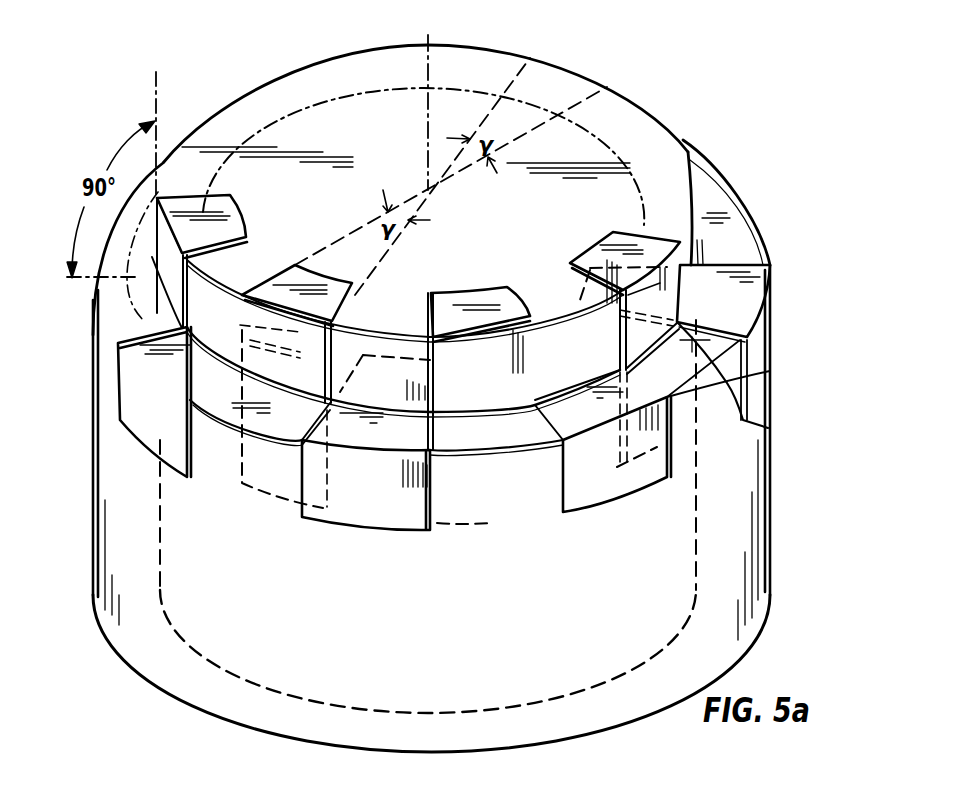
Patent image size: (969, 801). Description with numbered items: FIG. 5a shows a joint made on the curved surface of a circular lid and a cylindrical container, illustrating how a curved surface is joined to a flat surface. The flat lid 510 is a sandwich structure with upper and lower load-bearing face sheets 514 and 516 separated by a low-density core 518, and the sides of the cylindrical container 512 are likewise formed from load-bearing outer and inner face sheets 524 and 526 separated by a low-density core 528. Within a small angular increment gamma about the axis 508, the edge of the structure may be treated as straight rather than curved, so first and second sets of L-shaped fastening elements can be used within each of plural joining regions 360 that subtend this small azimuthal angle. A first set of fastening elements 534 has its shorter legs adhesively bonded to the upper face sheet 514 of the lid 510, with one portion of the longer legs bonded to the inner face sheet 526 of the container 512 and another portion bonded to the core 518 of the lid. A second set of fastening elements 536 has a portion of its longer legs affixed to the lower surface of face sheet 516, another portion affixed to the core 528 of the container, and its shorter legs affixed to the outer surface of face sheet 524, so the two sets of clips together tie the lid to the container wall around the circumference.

The axis 508 is at (427, 38).
The joining regions 360 is at (617, 77).
The flat lid 510 is at (632, 107).
The cylindrical container 512 is at (768, 510).
The upper load-bearing face sheet 514 is at (670, 140).
The lower load-bearing face sheet 516 is at (187, 355).
The low-density core 518 is at (693, 250).
The outer load-bearing face sheet 524 is at (768, 428).
The inner load-bearing face sheet 526 is at (770, 371).
The low-density core 528 is at (737, 250).
The first set of fastening elements 534 is at (238, 233).
The second set of fastening elements 536 is at (141, 448).